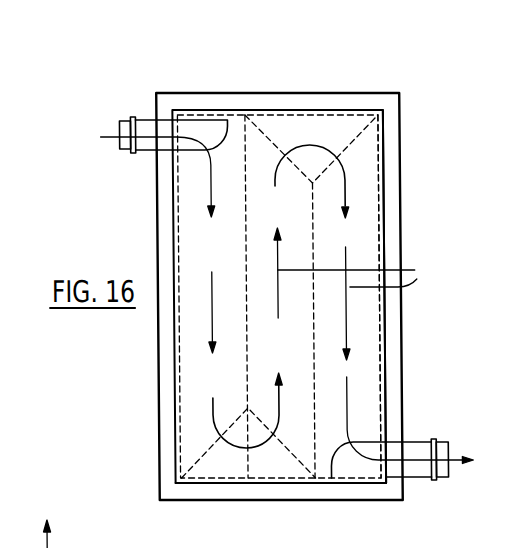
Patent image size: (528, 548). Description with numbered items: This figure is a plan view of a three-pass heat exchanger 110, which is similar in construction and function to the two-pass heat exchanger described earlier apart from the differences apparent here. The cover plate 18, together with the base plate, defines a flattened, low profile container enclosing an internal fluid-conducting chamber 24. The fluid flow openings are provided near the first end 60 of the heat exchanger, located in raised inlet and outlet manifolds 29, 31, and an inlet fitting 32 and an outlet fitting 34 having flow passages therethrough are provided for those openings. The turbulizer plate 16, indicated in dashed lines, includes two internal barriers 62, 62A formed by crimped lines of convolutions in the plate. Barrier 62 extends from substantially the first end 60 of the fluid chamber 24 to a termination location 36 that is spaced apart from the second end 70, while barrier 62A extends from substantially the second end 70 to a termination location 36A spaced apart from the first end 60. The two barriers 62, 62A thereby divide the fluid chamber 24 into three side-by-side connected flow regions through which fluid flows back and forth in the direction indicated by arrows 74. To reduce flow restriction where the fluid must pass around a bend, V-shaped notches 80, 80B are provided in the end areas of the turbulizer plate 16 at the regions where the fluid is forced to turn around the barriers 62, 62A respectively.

The three-pass heat exchanger 110 is at (424, 84).
The inlet fitting 32 is at (145, 119).
The outlet fitting 34 is at (415, 442).
The inlet manifold 29 is at (198, 125).
The outlet manifold 31 is at (350, 470).
The first end 60 is at (308, 109).
The turbulizer plate 16 is at (380, 342).
The cover plate 18 is at (368, 392).
The fluid-conducting chamber 24 is at (362, 232).
The second end 70 is at (246, 485).
The arrows 74 is at (358, 277).
The internal barrier 62 is at (245, 283).
The internal barrier 62A is at (311, 318).
The termination location 36 is at (251, 406).
The termination location 36A is at (311, 181).
The V-shaped notch 80 is at (221, 460).
The V-shaped notch 80B is at (326, 127).